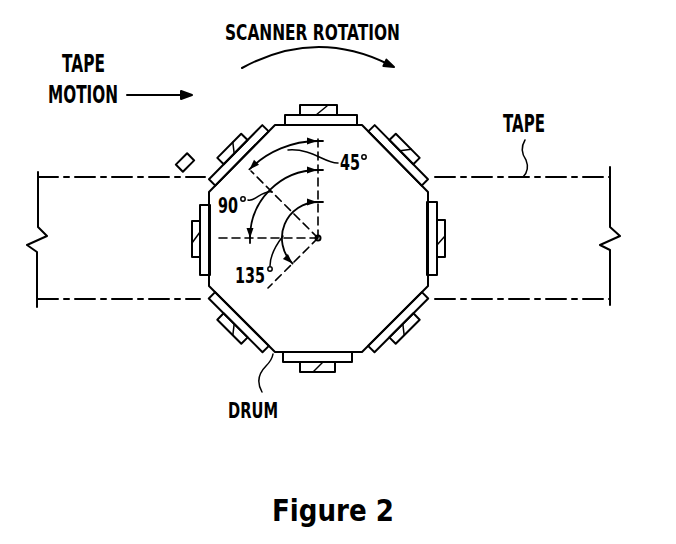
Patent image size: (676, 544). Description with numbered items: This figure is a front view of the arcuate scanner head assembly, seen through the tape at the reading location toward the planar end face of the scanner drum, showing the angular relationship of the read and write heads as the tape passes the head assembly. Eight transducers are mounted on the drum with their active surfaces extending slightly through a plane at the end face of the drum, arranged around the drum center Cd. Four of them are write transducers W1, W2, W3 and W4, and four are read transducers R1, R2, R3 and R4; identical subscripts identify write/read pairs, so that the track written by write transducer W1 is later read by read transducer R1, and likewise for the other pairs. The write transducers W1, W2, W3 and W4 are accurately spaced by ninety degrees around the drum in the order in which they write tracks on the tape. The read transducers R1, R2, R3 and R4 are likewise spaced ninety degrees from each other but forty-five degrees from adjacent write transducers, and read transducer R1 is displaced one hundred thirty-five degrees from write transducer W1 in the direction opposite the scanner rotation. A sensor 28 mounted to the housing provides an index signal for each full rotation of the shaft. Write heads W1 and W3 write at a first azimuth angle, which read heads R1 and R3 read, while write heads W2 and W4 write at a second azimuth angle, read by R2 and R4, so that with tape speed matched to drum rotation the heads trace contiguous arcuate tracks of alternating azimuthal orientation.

The sensor 28 is at (174, 161).
The write transducer W1 is at (192, 250).
The write transducer W2 is at (327, 372).
The write transducer W3 is at (445, 248).
The write transducer W4 is at (314, 105).
The read transducer R1 is at (397, 340).
The read transducer R2 is at (406, 136).
The read transducer R3 is at (232, 138).
The read transducer R4 is at (225, 328).
The drum center Cd is at (322, 243).